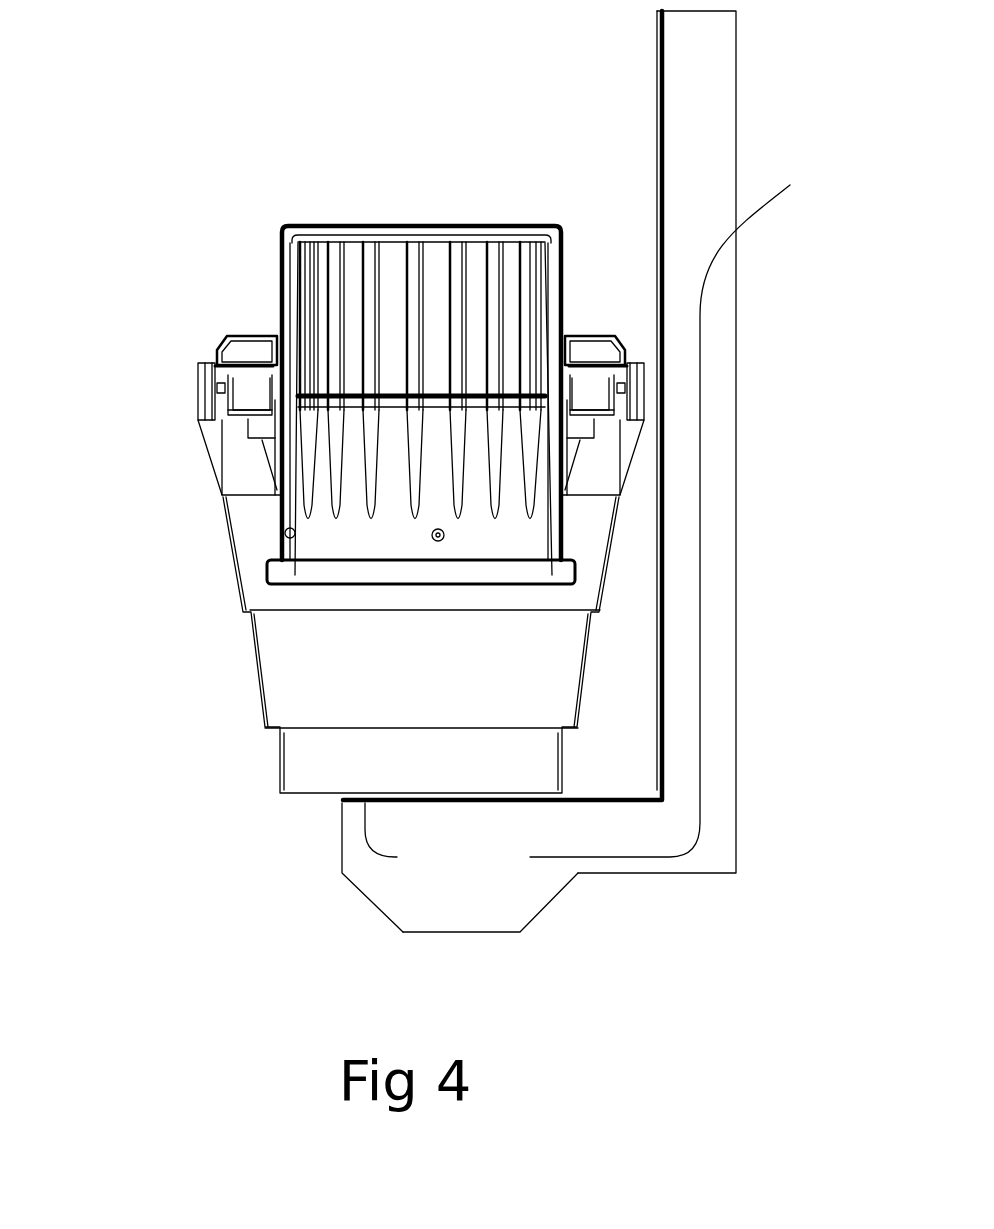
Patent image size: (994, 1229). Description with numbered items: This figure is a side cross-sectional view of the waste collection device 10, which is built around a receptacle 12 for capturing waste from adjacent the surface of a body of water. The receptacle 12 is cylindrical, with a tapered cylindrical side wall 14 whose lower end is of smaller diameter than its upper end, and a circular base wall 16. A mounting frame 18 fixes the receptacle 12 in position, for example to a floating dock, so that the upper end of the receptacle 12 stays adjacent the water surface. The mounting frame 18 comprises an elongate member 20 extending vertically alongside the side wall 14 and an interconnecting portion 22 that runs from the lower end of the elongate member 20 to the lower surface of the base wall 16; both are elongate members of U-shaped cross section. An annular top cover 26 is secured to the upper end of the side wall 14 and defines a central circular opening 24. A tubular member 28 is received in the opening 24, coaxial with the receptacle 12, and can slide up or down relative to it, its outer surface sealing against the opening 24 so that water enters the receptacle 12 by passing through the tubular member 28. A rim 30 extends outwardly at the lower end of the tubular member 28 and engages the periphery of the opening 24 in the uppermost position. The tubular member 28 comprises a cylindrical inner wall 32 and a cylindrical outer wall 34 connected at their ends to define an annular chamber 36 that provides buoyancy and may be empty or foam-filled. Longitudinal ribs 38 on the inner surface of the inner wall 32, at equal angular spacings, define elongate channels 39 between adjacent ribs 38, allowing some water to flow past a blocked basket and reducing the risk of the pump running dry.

The waste collection device 10 is at (203, 133).
The receptacle 12 is at (240, 620).
The cylindrical side wall 14 is at (255, 710).
The circular base wall 16 is at (310, 802).
The mounting frame 18 is at (746, 155).
The elongate member 20 is at (722, 548).
The interconnecting portion 22 is at (602, 865).
The opening 24 is at (272, 330).
The top cover 26 is at (590, 325).
The tubular member 28 is at (428, 216).
The rim 30 is at (262, 572).
The cylindrical inner wall 32 is at (300, 305).
The cylindrical outer wall 34 is at (285, 262).
The annular chamber 36 is at (290, 418).
The ribs 38 is at (460, 275).
The elongate channels 39 is at (480, 457).